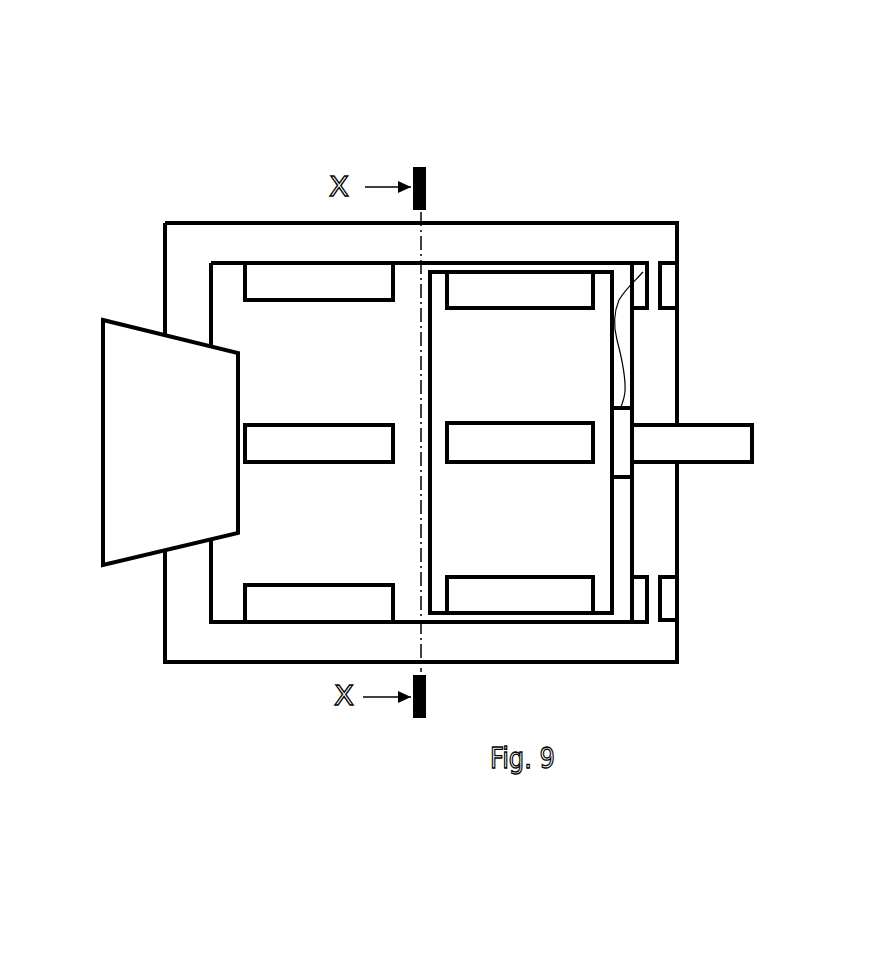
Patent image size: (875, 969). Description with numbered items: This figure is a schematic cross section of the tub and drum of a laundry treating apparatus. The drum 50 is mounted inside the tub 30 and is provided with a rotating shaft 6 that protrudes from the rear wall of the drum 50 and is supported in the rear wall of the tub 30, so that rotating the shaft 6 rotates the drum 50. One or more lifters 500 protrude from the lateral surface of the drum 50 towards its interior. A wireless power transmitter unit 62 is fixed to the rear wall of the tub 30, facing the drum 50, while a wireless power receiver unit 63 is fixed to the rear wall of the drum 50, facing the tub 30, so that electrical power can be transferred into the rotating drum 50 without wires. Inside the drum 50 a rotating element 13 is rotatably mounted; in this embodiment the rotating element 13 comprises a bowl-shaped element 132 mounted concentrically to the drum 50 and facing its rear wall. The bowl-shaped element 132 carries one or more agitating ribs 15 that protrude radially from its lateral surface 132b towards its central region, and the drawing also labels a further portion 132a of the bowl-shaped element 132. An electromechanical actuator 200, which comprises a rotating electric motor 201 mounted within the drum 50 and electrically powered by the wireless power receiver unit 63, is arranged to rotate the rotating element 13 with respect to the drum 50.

The tub 30 is at (207, 221).
The drum 50 is at (232, 625).
The lifters 500 is at (295, 290).
The rotating element 13 is at (540, 345).
The agitating ribs 15 is at (483, 300).
The wireless power receiver unit 63 is at (640, 268).
The wireless power transmitter unit 62 is at (668, 282).
The rotating electric motor 201 is at (622, 432).
The electromechanical actuator 200 is at (620, 465).
The rotating shaft 6 is at (720, 443).
The side wall 132a is at (612, 502).
The bowl-shaped element 132 is at (570, 552).
The lateral surface 132b is at (435, 625).